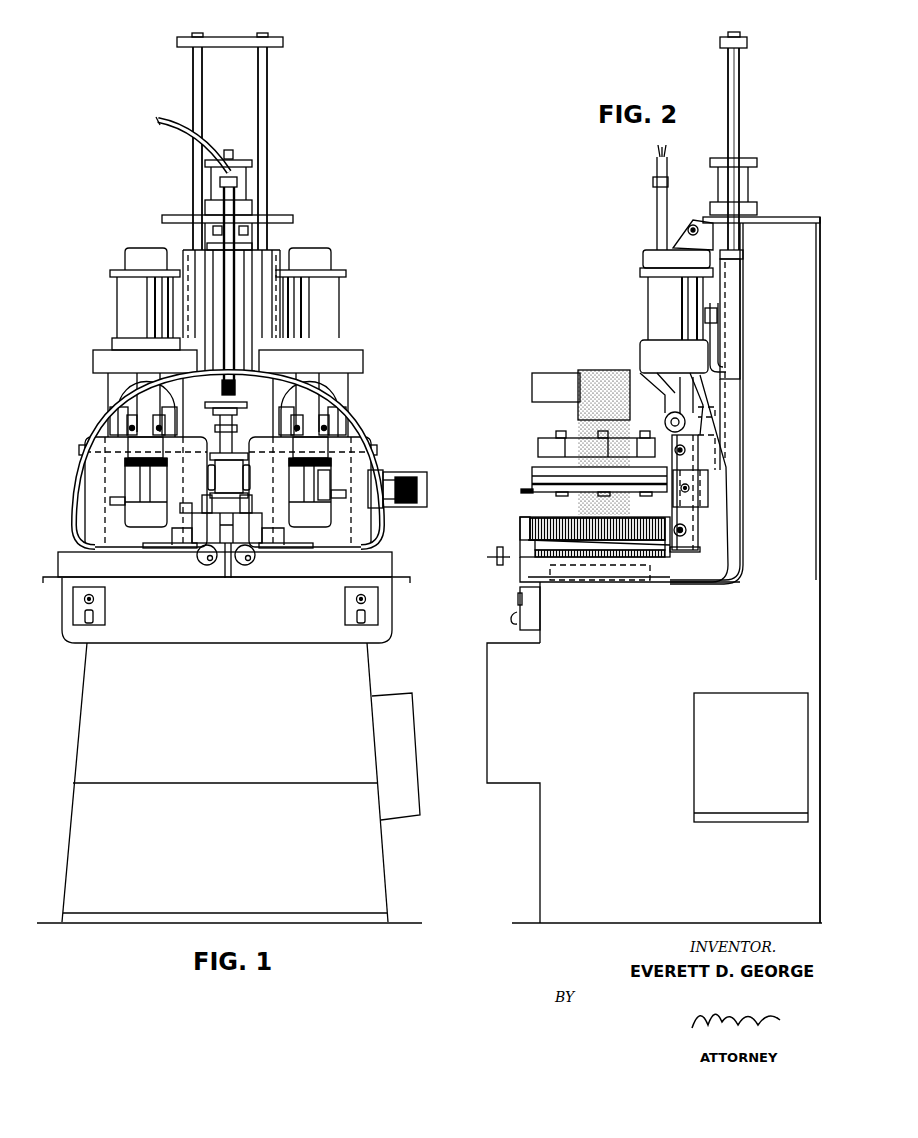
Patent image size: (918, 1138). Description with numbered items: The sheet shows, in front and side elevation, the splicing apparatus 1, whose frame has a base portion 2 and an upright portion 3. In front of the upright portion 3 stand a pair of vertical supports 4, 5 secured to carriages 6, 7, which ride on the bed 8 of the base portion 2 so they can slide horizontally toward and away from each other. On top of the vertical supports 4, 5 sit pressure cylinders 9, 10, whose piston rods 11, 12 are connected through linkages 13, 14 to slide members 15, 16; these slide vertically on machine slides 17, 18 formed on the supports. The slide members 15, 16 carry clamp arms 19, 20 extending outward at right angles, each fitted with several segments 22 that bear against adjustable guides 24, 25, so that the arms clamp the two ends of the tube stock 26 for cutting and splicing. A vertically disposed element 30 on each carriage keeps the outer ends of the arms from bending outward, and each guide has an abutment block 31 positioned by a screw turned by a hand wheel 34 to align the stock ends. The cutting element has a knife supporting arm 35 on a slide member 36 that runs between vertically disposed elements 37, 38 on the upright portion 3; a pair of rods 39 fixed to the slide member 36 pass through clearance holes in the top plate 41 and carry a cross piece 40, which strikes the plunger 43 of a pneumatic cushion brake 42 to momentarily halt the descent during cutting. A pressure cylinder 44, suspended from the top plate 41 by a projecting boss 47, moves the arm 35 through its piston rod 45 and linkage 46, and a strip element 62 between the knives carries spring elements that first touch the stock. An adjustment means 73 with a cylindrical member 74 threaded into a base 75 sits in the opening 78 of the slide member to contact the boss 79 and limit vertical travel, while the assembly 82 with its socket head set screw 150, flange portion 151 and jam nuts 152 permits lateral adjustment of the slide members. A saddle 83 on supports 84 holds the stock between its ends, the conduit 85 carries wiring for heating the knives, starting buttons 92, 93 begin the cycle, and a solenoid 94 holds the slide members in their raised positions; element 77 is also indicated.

In FIG. 1, the splicing apparatus 1 is at (352, 691).
In FIG. 2, the splicing apparatus 1 is at (462, 688).
In FIG. 1, the base portion 2 is at (362, 868).
In FIG. 2, the base portion 2 is at (552, 817).
In FIG. 1, the upright portion 3 is at (305, 248).
In FIG. 2, the upright portion 3 is at (790, 233).
In FIG. 1, the vertical support 4 is at (340, 376).
In FIG. 2, the vertical support 4 is at (717, 512).
In FIG. 1, the vertical support 5 is at (110, 372).
In FIG. 1, the carriage 6 is at (395, 574).
In FIG. 2, the carriage 6 is at (662, 570).
In FIG. 1, the carriage 7 is at (70, 558).
In FIG. 2, the bed 8 is at (597, 590).
In FIG. 1, the pressure cylinder 9 is at (335, 326).
In FIG. 2, the pressure cylinder 9 is at (660, 305).
In FIG. 1, the pressure cylinder 10 is at (125, 292).
In FIG. 1, the piston rod 11 is at (305, 397).
In FIG. 2, the piston rod 11 is at (683, 403).
In FIG. 1, the piston rod 12 is at (140, 393).
In FIG. 1, the linkage 13 is at (322, 425).
In FIG. 2, the linkage 13 is at (700, 428).
In FIG. 1, the linkage 14 is at (125, 425).
In FIG. 1, the slide member 15 is at (372, 476).
In FIG. 2, the slide member 15 is at (700, 448).
In FIG. 1, the slide member 16 is at (95, 477).
In FIG. 1, the machine slide 17 is at (342, 416).
In FIG. 2, the machine slide 17 is at (688, 420).
In FIG. 1, the machine slide 18 is at (115, 415).
In FIG. 1, the clamp arm 19 is at (247, 498).
In FIG. 2, the clamp arm 19 is at (530, 517).
In FIG. 1, the clamp arm 20 is at (205, 498).
In FIG. 1, the segment 22 is at (182, 508).
In FIG. 1, the adjustable guide 24 is at (248, 563).
In FIG. 2, the adjustable guide 24 is at (516, 564).
In FIG. 1, the adjustable guide 25 is at (204, 563).
In FIG. 1, the tube stock 26 is at (175, 378).
In FIG. 2, the tube stock 26 is at (637, 570).
In FIG. 2, the vertically disposed element 30 is at (527, 540).
In FIG. 1, the abutment block 31 is at (162, 550).
In FIG. 2, the abutment block 31 is at (570, 570).
In FIG. 1, the hand wheel 34 is at (228, 568).
In FIG. 2, the hand wheel 34 is at (495, 552).
In FIG. 2, the knife supporting arm 35 is at (560, 448).
In FIG. 1, the slide member 36 is at (272, 250).
In FIG. 2, the slide member 36 is at (738, 255).
In FIG. 1, the vertically disposed element 37 is at (276, 262).
In FIG. 2, the vertically disposed element 37 is at (740, 283).
In FIG. 1, the vertically disposed element 38 is at (180, 263).
In FIG. 1, the rod 39 is at (196, 108).
In FIG. 2, the rod 39 is at (740, 80).
In FIG. 1, the cross piece 40 is at (235, 42).
In FIG. 2, the cross piece 40 is at (746, 42).
In FIG. 1, the top plate 41 is at (173, 218).
In FIG. 2, the top plate 41 is at (768, 218).
In FIG. 1, the pneumatic cushion brake 42 is at (243, 173).
In FIG. 2, the pneumatic cushion brake 42 is at (742, 170).
In FIG. 1, the plunger 43 is at (229, 150).
In FIG. 1, the pressure cylinder 44 is at (236, 312).
In FIG. 2, the pressure cylinder 44 is at (706, 316).
In FIG. 1, the piston rod 45 is at (220, 430).
In FIG. 1, the linkage 46 is at (235, 450).
In FIG. 2, the projecting boss 47 is at (707, 218).
In FIG. 2, the strip element 62 is at (530, 478).
In FIG. 1, the adjustment means 73 is at (325, 484).
In FIG. 1, the cylindrical member 74 is at (340, 470).
In FIG. 1, the base 75 is at (130, 484).
In FIG. 1, the cup bottom 77 is at (318, 520).
In FIG. 1, the opening 78 is at (112, 501).
In FIG. 1, the boss 79 is at (140, 452).
In FIG. 1, the assembly 82 is at (82, 449).
In FIG. 1, the saddle 83 is at (268, 382).
In FIG. 2, the saddle 83 is at (546, 382).
In FIG. 2, the support 84 is at (718, 360).
In FIG. 1, the conduit 85 is at (236, 195).
In FIG. 2, the conduit 85 is at (660, 200).
In FIG. 1, the starting button 92 is at (358, 600).
In FIG. 1, the starting button 93 is at (93, 600).
In FIG. 1, the solenoid 94 is at (420, 489).
In FIG. 2, the socket head set screw 150 is at (702, 454).
In FIG. 2, the flange portion 151 is at (700, 541).
In FIG. 2, the jam nut 152 is at (690, 525).